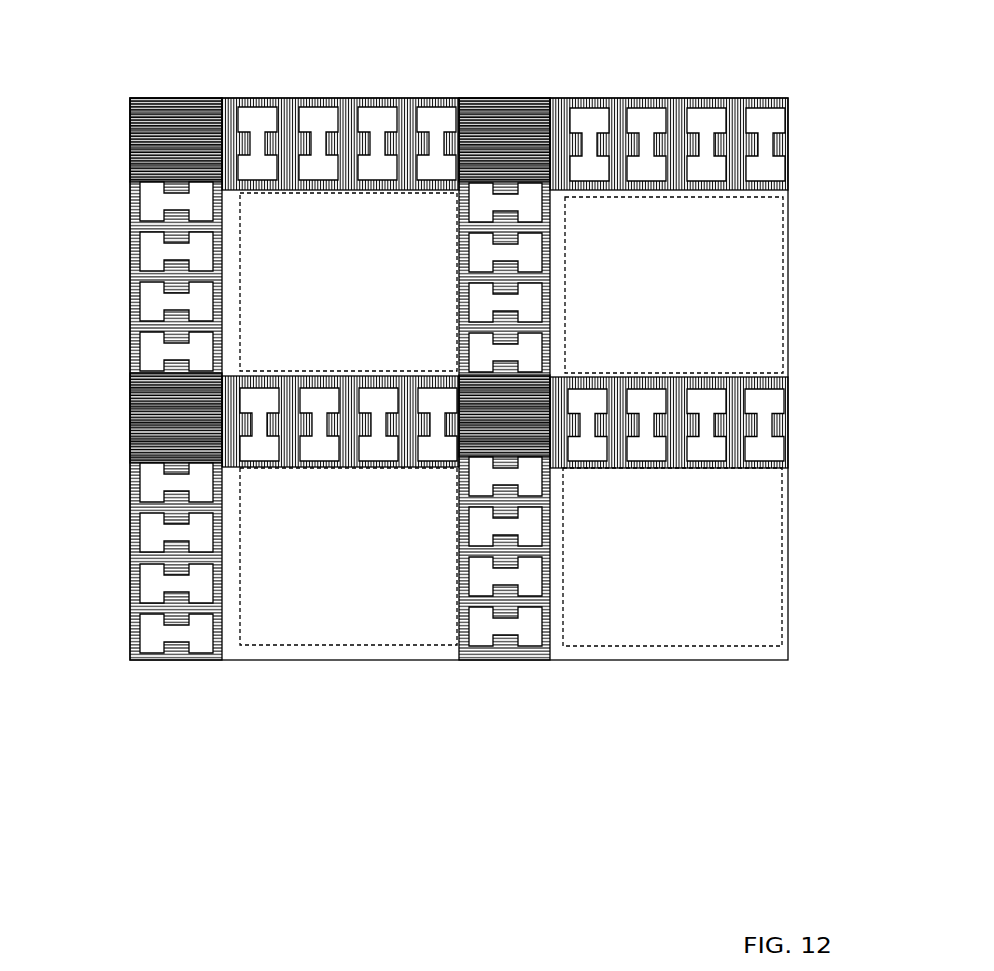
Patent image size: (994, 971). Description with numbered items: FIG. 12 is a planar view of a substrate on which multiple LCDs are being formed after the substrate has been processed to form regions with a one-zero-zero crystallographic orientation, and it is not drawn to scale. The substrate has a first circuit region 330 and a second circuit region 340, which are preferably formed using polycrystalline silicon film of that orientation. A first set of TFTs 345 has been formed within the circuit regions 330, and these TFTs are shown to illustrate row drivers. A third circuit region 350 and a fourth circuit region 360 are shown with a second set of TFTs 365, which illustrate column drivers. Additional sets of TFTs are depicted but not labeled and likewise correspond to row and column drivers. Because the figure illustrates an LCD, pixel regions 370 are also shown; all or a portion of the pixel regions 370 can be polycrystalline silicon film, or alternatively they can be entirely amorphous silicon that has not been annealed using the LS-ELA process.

The first circuit region 330 is at (165, 102).
The second circuit region 340 is at (503, 112).
The first set of TFTs 345 is at (143, 360).
The third circuit region 350 is at (342, 105).
The fourth circuit region 360 is at (670, 115).
The second set of TFTs 365 is at (382, 120).
The pixel regions 370 is at (747, 240).